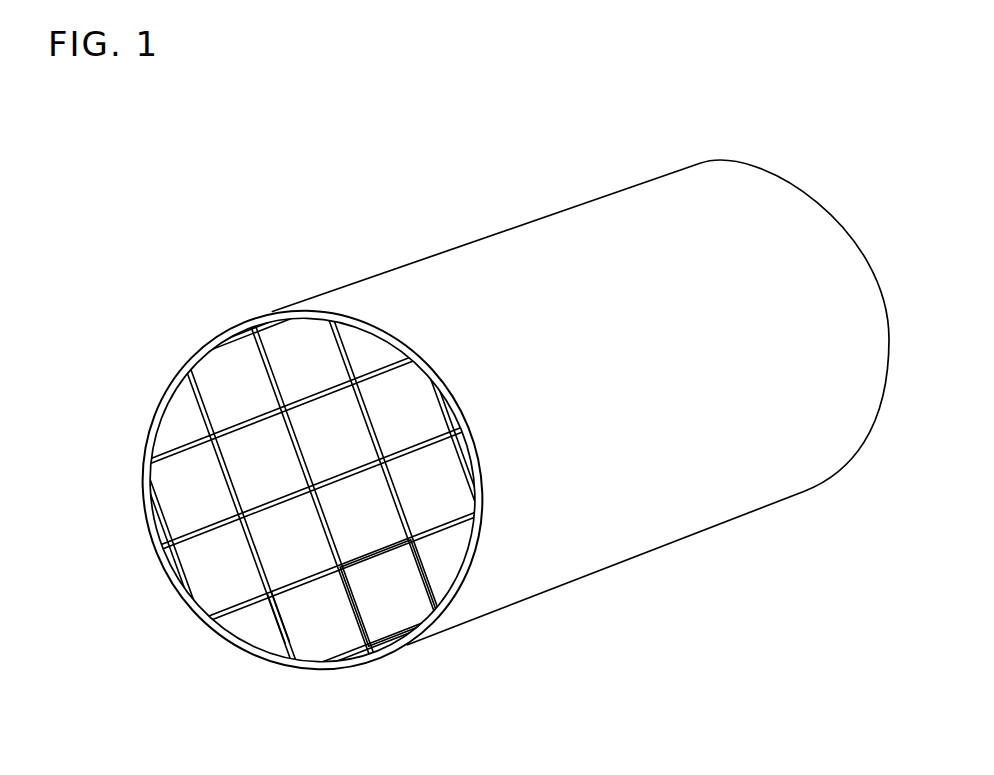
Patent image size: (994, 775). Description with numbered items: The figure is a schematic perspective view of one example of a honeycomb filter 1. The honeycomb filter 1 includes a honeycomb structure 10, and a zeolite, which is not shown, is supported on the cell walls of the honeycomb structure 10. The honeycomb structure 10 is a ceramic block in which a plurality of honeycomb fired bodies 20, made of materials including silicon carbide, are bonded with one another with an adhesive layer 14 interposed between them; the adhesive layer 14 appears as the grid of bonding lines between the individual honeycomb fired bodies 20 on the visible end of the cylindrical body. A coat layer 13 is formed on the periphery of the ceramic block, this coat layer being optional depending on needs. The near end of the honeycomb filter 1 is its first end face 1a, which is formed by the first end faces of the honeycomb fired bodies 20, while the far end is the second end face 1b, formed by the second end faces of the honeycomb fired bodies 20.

The honeycomb filter 1 is at (478, 420).
The first end face 1a is at (365, 488).
The second end face 1b is at (790, 161).
The honeycomb structure 10 is at (155, 565).
The coat layer 13 is at (476, 519).
The adhesive layer 14 is at (273, 607).
The honeycomb fired body 20 is at (390, 583).